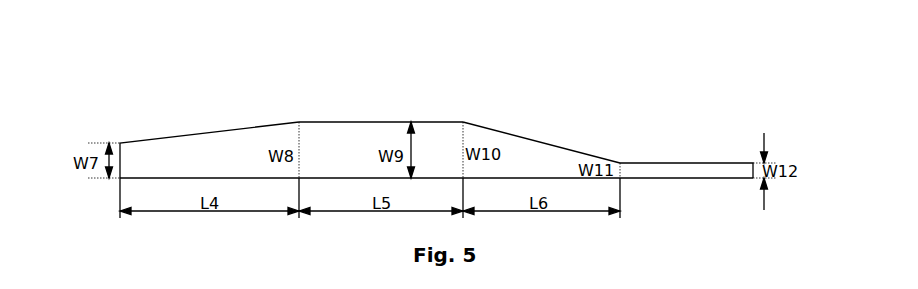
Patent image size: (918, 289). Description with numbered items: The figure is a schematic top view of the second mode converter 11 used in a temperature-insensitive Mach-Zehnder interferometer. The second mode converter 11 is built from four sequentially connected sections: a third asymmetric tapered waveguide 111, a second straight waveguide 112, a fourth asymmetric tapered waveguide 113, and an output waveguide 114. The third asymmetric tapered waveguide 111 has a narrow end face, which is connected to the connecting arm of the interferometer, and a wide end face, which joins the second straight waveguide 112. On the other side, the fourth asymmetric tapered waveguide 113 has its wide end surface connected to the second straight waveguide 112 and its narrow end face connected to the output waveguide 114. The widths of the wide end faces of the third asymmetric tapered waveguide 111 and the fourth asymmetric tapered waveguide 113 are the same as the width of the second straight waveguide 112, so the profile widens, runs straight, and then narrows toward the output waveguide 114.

The second mode converter 11 is at (147, 28).
The third asymmetric tapered waveguide 111 is at (209, 117).
The second straight waveguide 112 is at (381, 102).
The fourth asymmetric tapered waveguide 113 is at (541, 109).
The output waveguide 114 is at (686, 117).